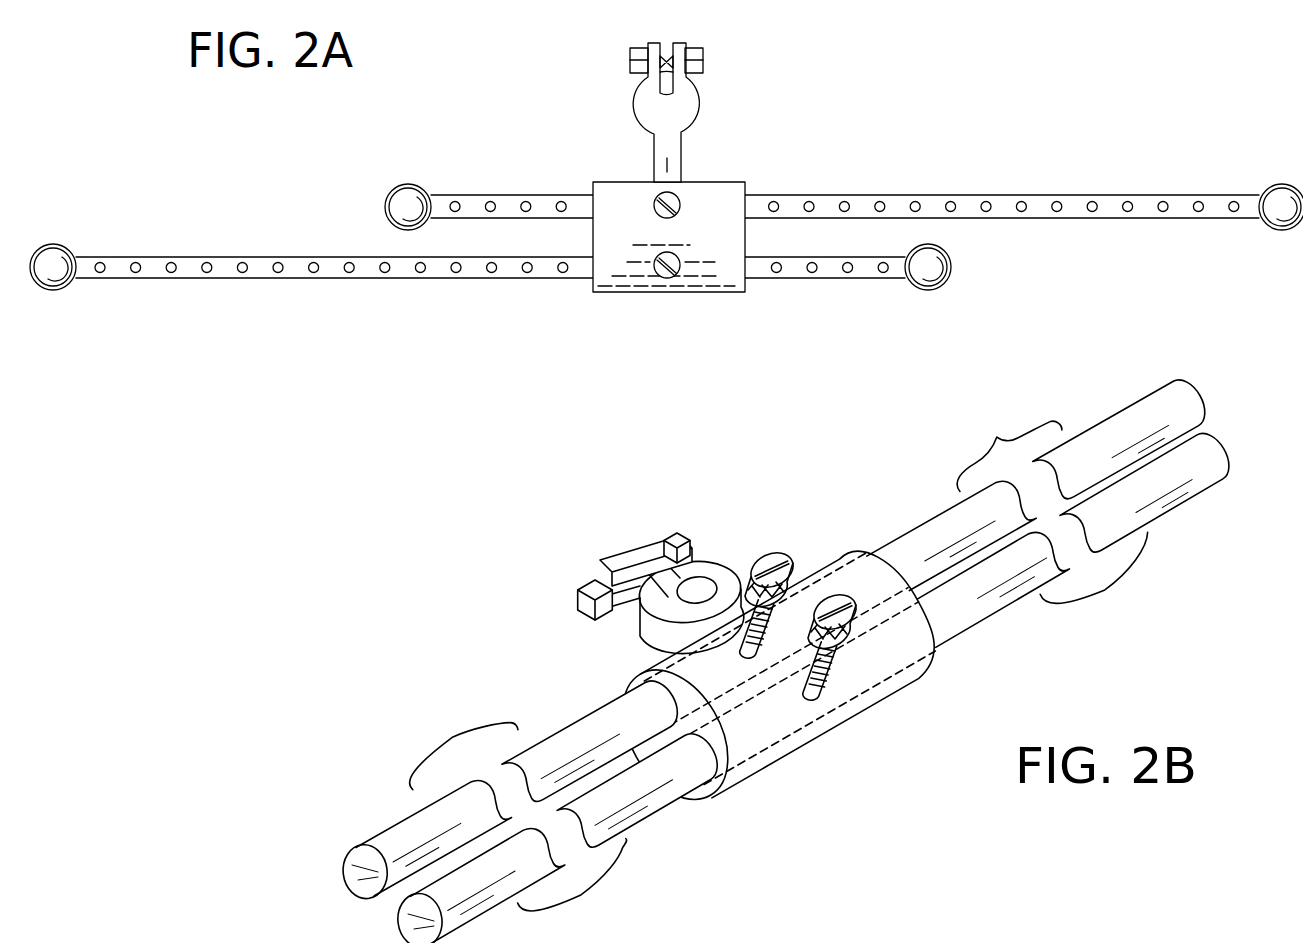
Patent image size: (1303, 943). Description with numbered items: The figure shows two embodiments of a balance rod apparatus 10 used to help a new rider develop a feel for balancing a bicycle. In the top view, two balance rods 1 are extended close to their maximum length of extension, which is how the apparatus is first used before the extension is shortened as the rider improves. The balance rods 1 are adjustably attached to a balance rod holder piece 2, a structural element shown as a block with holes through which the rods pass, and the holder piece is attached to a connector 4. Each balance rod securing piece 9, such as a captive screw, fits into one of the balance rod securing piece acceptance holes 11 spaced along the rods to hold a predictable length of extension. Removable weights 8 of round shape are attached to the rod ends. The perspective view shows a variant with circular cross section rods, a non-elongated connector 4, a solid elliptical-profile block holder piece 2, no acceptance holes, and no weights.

In FIG. 2A, the balance rod 1 is at (1110, 220).
In FIG. 2B, the balance rod 1 is at (377, 838).
In FIG. 2A, the balance rod holder piece 2 is at (732, 293).
In FIG. 2B, the balance rod holder piece 2 is at (789, 755).
In FIG. 2A, the connector 4 is at (700, 96).
In FIG. 2B, the connector 4 is at (604, 570).
In FIG. 2A, the weight 8 is at (55, 243).
In FIG. 2A, the balance rod securing piece 9 is at (682, 208).
In FIG. 2B, the balance rod securing piece 9 is at (860, 640).
In FIG. 2A, the balance rod apparatus 10 is at (410, 322).
In FIG. 2B, the balance rod apparatus 10 is at (730, 830).
In FIG. 2A, the balance rod securing piece acceptance hole 11 is at (880, 200).